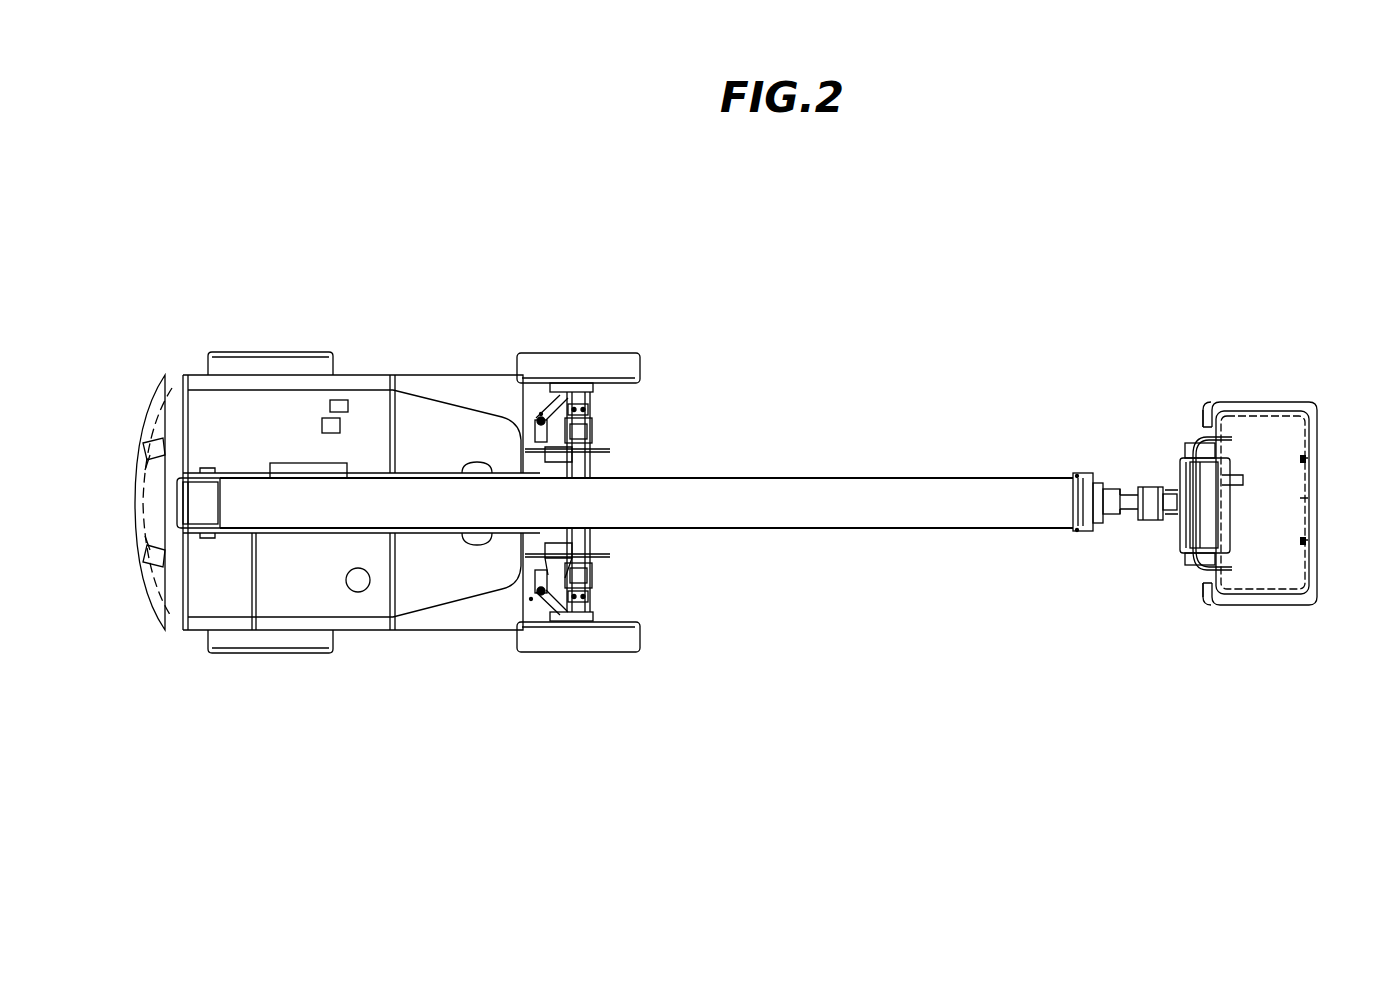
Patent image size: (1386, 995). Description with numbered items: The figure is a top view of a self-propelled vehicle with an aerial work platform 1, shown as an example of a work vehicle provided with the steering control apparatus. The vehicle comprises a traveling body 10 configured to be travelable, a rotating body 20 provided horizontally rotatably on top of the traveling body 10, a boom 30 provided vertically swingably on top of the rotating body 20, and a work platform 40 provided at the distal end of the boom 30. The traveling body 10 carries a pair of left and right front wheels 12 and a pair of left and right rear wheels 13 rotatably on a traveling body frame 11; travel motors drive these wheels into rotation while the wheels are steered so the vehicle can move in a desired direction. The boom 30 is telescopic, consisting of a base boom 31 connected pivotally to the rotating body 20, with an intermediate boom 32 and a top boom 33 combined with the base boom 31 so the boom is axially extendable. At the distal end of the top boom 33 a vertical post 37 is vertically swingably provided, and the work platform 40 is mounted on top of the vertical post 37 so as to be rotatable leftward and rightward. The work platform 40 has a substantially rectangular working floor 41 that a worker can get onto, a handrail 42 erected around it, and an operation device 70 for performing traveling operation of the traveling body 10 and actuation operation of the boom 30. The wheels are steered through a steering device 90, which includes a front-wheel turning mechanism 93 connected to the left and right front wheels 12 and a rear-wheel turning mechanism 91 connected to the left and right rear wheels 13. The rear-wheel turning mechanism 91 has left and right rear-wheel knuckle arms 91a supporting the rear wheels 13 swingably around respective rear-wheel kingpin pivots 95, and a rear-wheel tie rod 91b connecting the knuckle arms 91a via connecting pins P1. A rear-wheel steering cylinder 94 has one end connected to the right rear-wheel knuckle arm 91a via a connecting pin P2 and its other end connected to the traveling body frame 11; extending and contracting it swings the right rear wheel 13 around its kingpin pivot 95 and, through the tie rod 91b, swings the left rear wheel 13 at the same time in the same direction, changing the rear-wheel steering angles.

The vehicle with an aerial work platform 1 is at (790, 301).
The traveling body 10 is at (658, 657).
The traveling body frame 11 is at (598, 452).
The front wheels 12 is at (270, 352).
The rear wheels 13 is at (590, 352).
The rotating body 20 is at (161, 374).
The boom 30 is at (857, 470).
The base boom 31 is at (960, 478).
The intermediate boom 32 is at (1085, 476).
The top boom 33 is at (1125, 517).
The vertical post 37 is at (1150, 490).
The work platform 40 is at (1299, 392).
The working floor 41 is at (1285, 522).
The handrail 42 is at (1312, 568).
The operation device 70 is at (1204, 462).
The steering device 90 is at (470, 272).
The rear-wheel turning mechanism 91 is at (533, 615).
The rear-wheel knuckle arms 91a is at (541, 412).
The rear-wheel tie rod 91b is at (537, 430).
The front-wheel turning mechanism 93 is at (279, 403).
The rear-wheel steering cylinder 94 is at (562, 578).
The rear-wheel kingpin pivots 95 is at (590, 407).
The connecting pins P1 is at (540, 412).
The connecting pin P2 is at (530, 600).